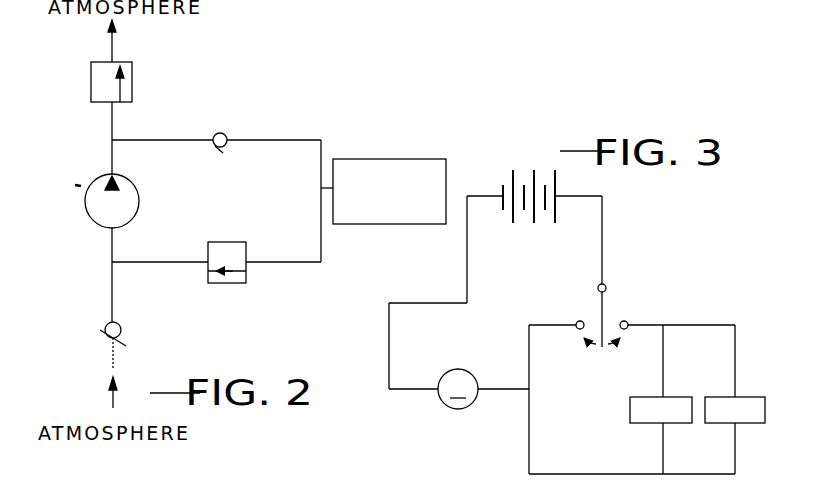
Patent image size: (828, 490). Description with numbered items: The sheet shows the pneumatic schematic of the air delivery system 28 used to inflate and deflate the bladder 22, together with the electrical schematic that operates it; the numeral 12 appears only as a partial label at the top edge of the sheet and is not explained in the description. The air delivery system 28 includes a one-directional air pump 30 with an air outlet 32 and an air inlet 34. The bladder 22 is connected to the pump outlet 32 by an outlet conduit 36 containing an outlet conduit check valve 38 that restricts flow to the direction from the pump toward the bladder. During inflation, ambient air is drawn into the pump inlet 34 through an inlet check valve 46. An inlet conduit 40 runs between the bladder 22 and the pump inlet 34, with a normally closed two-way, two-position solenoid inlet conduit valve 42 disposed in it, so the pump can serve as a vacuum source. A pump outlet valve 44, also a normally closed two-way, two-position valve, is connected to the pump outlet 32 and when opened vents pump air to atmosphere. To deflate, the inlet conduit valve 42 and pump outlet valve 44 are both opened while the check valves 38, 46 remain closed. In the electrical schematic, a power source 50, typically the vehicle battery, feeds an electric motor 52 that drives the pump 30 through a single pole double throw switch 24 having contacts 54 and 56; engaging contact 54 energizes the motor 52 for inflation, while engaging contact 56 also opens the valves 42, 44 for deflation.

In FIG. 2, the apparatus 12 is at (372, 2).
In FIG. 2, the bladder 22 is at (376, 159).
In FIG. 3, the switch 24 is at (606, 318).
In FIG. 2, the air delivery system 28 is at (80, 88).
In FIG. 2, the one-directional air pump 30 is at (87, 210).
In FIG. 2, the air outlet 32 is at (112, 155).
In FIG. 2, the air inlet 34 is at (112, 258).
In FIG. 2, the outlet conduit 36 is at (292, 140).
In FIG. 2, the outlet conduit check valve 38 is at (215, 133).
In FIG. 2, the inlet conduit 40 is at (141, 262).
In FIG. 2, the inlet conduit valve 42 is at (225, 288).
In FIG. 3, the inlet conduit valve 42 is at (632, 424).
In FIG. 2, the pump outlet valve 44 is at (133, 90).
In FIG. 3, the pump outlet valve 44 is at (720, 424).
In FIG. 2, the inlet check valve 46 is at (119, 334).
In FIG. 3, the power source 50 is at (511, 176).
In FIG. 3, the electric motor 52 is at (457, 410).
In FIG. 3, the contact 54 is at (581, 320).
In FIG. 3, the contact 56 is at (627, 330).